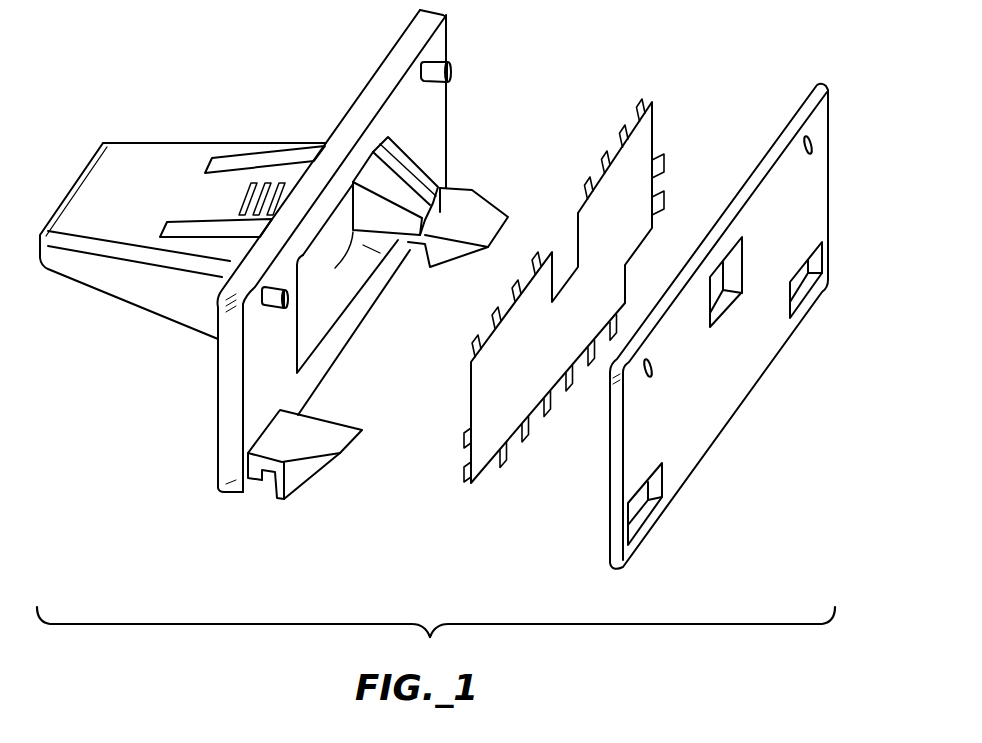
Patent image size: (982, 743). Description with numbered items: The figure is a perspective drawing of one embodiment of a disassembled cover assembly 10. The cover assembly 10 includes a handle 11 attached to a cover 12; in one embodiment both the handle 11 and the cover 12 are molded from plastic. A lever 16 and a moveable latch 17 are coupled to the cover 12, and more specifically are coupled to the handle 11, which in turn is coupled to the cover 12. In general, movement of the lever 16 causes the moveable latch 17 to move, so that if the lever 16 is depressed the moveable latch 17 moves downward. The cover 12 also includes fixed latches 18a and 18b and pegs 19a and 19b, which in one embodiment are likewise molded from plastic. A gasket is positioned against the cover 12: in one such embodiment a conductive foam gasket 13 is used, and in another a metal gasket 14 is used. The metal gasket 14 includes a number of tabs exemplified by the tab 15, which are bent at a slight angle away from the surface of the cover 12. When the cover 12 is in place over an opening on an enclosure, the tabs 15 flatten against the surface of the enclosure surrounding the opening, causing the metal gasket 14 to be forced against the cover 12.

The cover assembly 10 is at (151, 44).
The handle 11 is at (182, 214).
The cover 12 is at (340, 268).
The conductive foam gasket 13 is at (692, 445).
The metal gasket 14 is at (610, 293).
The tab 15 is at (512, 458).
The lever 16 is at (287, 200).
The moveable latch 17 is at (407, 173).
The fixed latch 18a is at (265, 482).
The fixed latch 18b is at (457, 197).
The peg 19a is at (275, 310).
The peg 19b is at (452, 70).